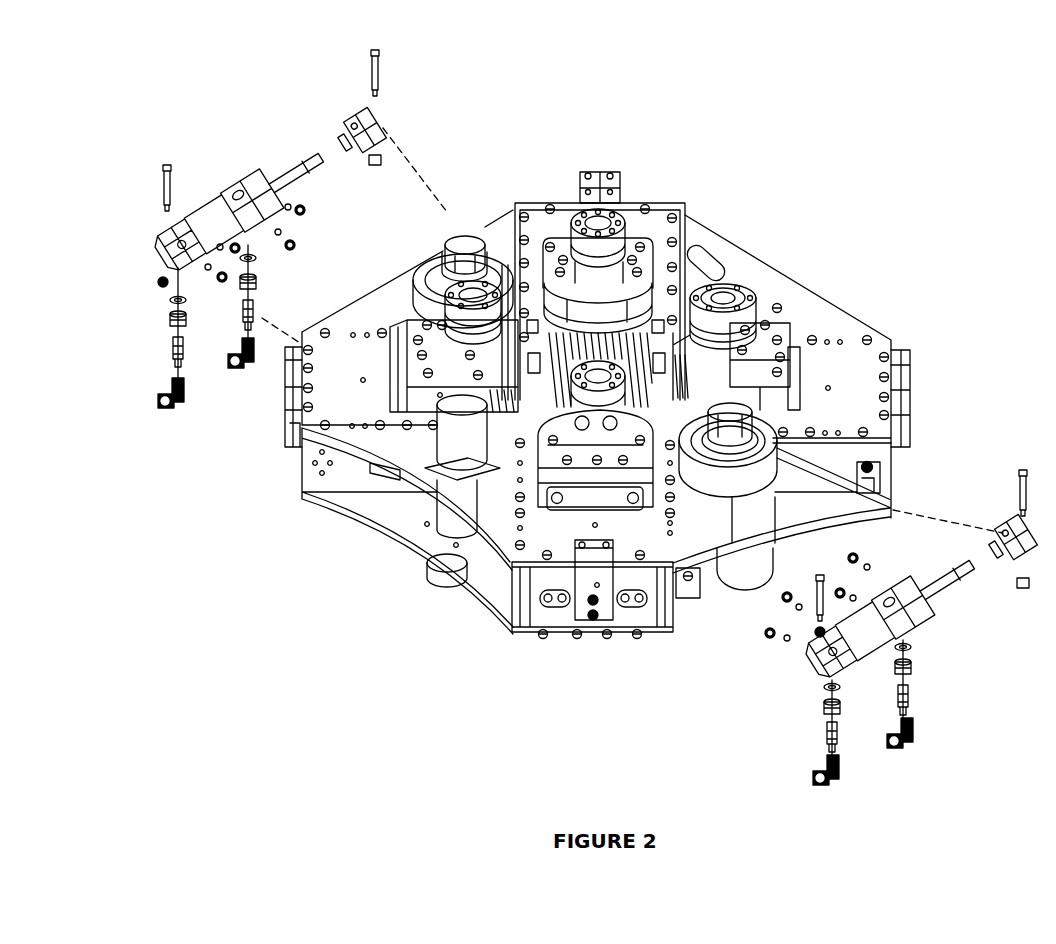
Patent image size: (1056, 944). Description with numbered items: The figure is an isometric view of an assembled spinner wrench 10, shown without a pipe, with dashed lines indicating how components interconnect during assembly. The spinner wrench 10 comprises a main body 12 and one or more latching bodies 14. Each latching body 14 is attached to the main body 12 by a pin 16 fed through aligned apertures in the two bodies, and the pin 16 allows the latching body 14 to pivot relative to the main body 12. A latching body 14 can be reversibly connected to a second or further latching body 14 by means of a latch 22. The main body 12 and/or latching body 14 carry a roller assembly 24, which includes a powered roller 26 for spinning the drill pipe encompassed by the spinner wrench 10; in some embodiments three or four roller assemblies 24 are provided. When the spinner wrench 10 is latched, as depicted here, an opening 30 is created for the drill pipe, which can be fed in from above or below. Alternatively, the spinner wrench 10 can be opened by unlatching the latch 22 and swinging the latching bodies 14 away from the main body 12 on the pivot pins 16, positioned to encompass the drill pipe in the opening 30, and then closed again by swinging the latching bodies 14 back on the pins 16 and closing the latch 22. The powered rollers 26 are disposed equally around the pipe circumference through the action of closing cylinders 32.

The spinner wrench 10 is at (481, 107).
The main body 12 is at (337, 475).
The latching body 14 is at (660, 216).
The pin 16 is at (418, 305).
The latch 22 is at (710, 258).
The roller assembly 24 is at (648, 280).
The powered roller 26 is at (543, 273).
The opening 30 is at (530, 440).
The closing cylinder 32 is at (212, 223).